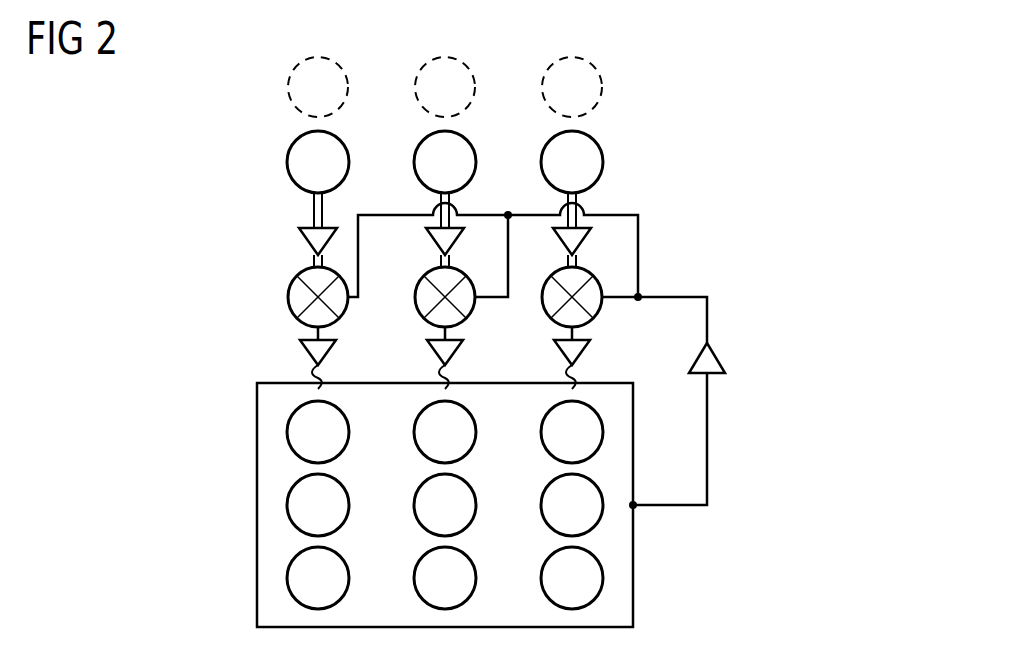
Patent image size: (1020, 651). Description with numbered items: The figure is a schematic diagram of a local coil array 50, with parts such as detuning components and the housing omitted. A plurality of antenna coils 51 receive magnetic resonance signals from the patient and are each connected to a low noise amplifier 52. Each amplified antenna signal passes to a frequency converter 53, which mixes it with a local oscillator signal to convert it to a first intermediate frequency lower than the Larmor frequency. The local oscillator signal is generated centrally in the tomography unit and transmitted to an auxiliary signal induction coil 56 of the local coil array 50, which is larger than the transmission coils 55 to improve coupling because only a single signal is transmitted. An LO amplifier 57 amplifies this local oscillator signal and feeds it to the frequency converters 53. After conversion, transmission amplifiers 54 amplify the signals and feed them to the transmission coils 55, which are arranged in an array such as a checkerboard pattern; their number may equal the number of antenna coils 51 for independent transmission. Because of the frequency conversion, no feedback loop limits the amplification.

The local coil array 50 is at (735, 111).
The antenna coil 51 is at (289, 90).
The low noise amplifier 52 is at (310, 241).
The frequency converter 53 is at (289, 300).
The transmission amplifier 54 is at (308, 354).
The transmission coil 55 is at (288, 434).
The auxiliary signal induction coil 56 is at (634, 598).
The LO amplifier 57 is at (718, 362).